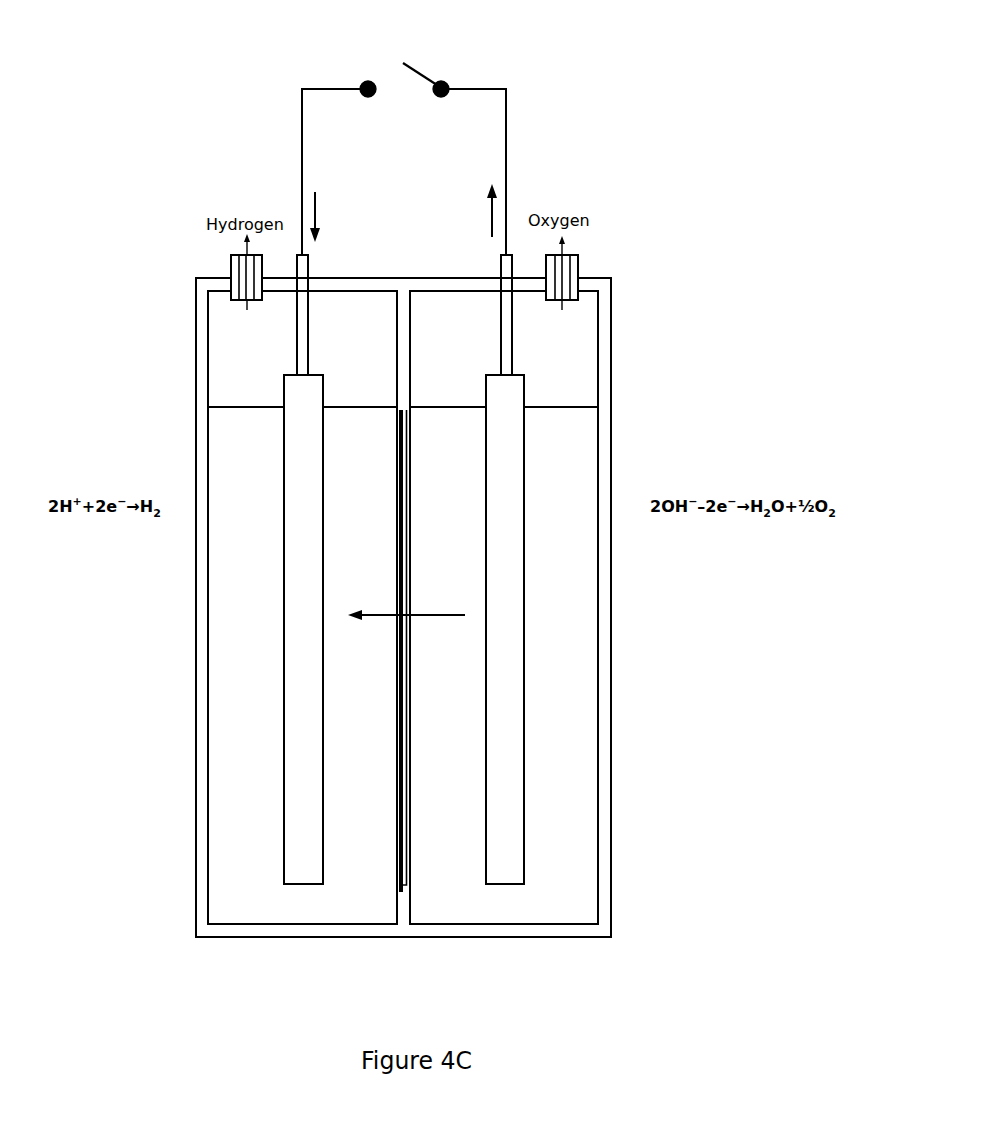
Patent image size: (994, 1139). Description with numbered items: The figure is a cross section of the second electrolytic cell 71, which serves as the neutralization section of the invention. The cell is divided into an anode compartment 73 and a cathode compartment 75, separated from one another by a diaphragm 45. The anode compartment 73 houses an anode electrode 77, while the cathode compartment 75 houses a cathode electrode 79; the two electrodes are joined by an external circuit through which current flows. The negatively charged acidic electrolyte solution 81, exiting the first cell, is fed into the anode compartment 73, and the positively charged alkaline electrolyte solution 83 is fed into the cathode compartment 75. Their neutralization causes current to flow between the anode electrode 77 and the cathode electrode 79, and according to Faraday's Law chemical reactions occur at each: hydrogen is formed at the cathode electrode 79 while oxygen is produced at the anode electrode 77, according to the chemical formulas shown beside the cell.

The second electrolytic cell 71 is at (684, 154).
The anode compartment 73 is at (612, 582).
The cathode compartment 75 is at (195, 611).
The anode electrode 77 is at (508, 487).
The cathode electrode 79 is at (298, 443).
The acidic electrolyte solution 81 is at (565, 682).
The alkaline electrolyte solution 83 is at (234, 743).
The diaphragm 45 is at (410, 886).